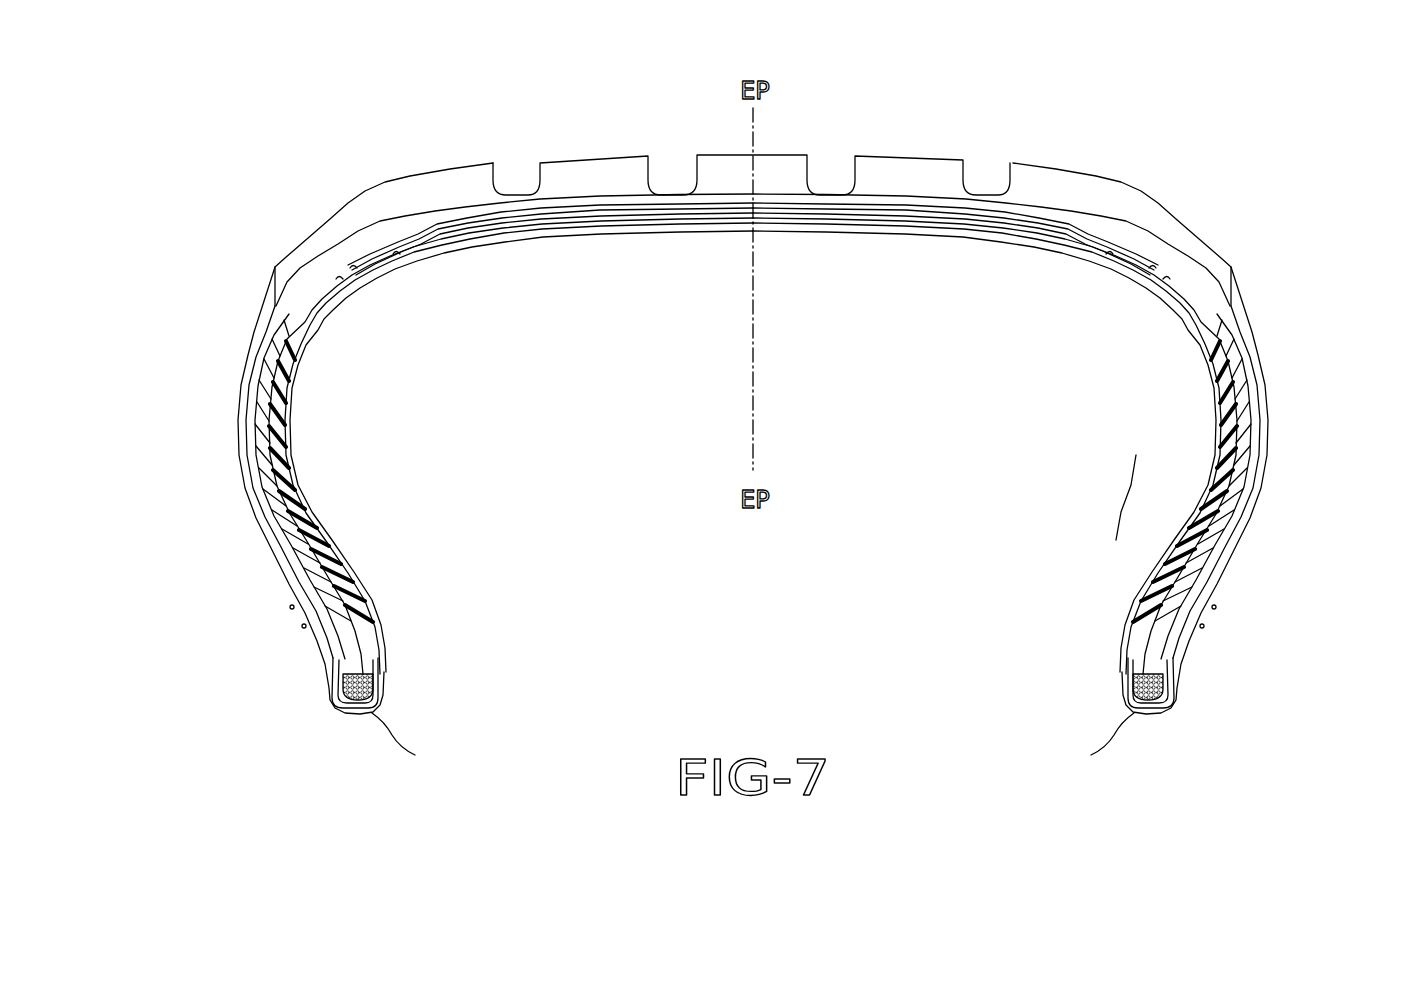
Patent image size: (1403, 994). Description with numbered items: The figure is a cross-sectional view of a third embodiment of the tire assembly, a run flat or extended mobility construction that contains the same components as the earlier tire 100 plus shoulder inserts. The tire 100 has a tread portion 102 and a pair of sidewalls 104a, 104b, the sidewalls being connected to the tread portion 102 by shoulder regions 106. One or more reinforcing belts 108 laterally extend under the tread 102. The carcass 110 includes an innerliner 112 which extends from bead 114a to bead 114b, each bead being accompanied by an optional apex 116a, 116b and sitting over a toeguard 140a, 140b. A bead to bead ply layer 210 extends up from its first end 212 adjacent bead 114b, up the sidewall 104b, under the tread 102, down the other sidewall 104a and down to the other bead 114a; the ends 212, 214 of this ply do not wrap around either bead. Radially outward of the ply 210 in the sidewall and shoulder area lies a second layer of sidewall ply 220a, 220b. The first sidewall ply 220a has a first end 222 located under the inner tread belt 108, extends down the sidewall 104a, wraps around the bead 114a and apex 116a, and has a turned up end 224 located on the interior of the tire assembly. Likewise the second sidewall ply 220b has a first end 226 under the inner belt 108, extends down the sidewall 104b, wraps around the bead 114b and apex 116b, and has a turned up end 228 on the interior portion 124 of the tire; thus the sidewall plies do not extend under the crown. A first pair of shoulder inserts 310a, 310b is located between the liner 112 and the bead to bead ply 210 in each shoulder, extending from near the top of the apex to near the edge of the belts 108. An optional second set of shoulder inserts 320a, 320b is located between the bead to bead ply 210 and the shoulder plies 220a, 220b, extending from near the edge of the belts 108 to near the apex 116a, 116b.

The tire 100 is at (258, 628).
The tread portion 102 is at (910, 148).
The sidewall 104a is at (1268, 420).
The sidewall 104b is at (238, 420).
The shoulder region 106 is at (260, 303).
The reinforcing belt 108 is at (417, 222).
The carcass 110 is at (312, 340).
The innerliner 112 is at (641, 234).
The bead 114a is at (1136, 683).
The bead 114b is at (370, 683).
The apex 116a is at (1198, 580).
The apex 116b is at (308, 580).
The interior portion 124 is at (1092, 596).
The toeguard 140a is at (1114, 737).
The toeguard 140b is at (392, 737).
The ply layer 210 is at (830, 236).
The first end of ply layer 210 212 is at (340, 684).
The end of ply layer 210 214 is at (1166, 684).
The first sidewall ply 220a is at (1258, 505).
The second sidewall ply 220b is at (248, 505).
The first end of sidewall ply 220a 222 is at (1113, 258).
The turned up end of sidewall ply 220a 224 is at (1208, 522).
The first end of sidewall ply 220b 226 is at (392, 260).
The turned up end of sidewall ply 220b 228 is at (300, 520).
The first shoulder insert 310a is at (1214, 444).
The first shoulder insert 310b is at (292, 444).
The second shoulder insert 320a is at (1256, 457).
The second shoulder insert 320b is at (250, 457).